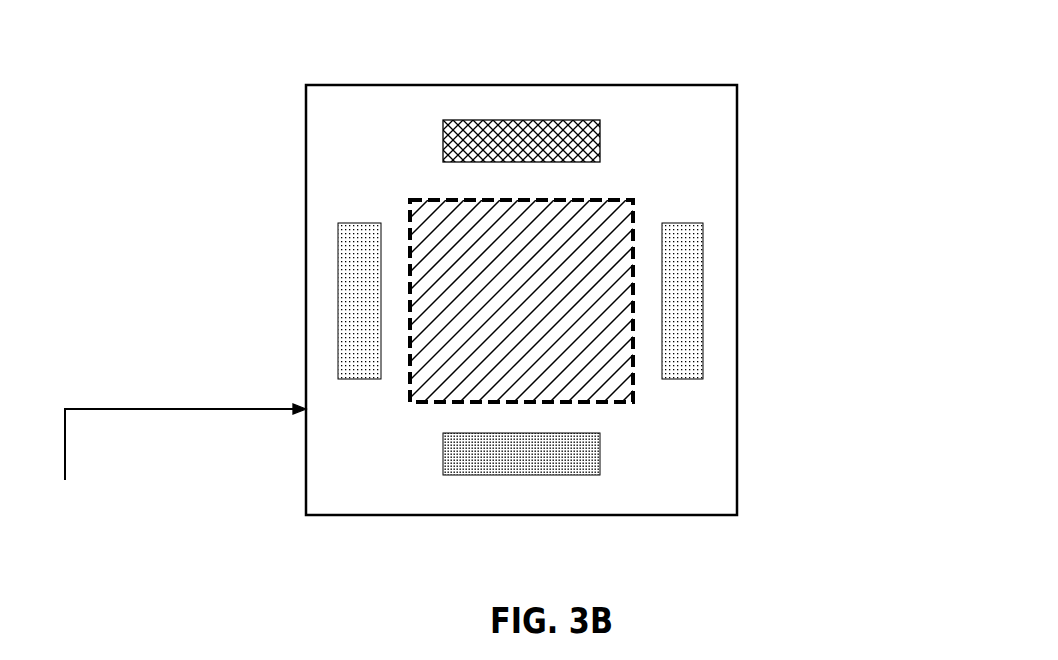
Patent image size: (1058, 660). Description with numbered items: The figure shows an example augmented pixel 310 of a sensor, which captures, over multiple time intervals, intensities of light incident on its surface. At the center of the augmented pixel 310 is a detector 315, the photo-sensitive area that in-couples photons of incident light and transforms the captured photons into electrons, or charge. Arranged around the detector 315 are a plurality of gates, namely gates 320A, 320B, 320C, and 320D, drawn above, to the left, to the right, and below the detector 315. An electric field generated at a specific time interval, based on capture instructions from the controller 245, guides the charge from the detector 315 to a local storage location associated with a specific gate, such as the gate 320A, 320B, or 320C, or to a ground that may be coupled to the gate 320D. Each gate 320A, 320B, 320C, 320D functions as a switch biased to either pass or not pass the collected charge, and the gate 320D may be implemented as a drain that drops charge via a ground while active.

The augmented pixel 310 is at (343, 85).
The gate 320A is at (512, 127).
The gate 320B is at (352, 277).
The gate 320C is at (683, 282).
The gate 320D is at (558, 460).
The detector 315 is at (632, 217).
The controller 245 is at (87, 540).